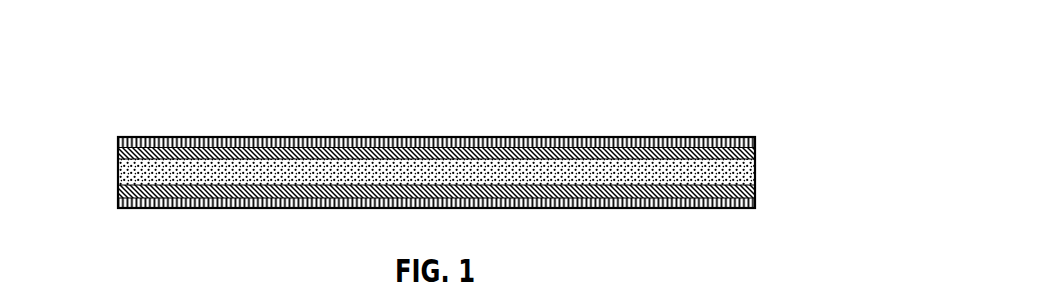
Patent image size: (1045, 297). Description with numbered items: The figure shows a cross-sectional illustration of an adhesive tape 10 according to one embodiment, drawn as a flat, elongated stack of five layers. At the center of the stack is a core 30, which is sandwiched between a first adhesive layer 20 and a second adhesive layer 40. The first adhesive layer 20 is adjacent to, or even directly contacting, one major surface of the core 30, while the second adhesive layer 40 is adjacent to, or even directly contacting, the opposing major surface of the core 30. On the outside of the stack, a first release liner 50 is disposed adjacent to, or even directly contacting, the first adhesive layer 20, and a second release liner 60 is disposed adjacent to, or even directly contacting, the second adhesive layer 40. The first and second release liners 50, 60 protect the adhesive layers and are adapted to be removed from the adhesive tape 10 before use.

The adhesive tape 10 is at (693, 67).
The first adhesive layer 20 is at (118, 188).
The core 30 is at (755, 176).
The second adhesive layer 40 is at (118, 152).
The first release liner 50 is at (755, 202).
The second release liner 60 is at (755, 143).